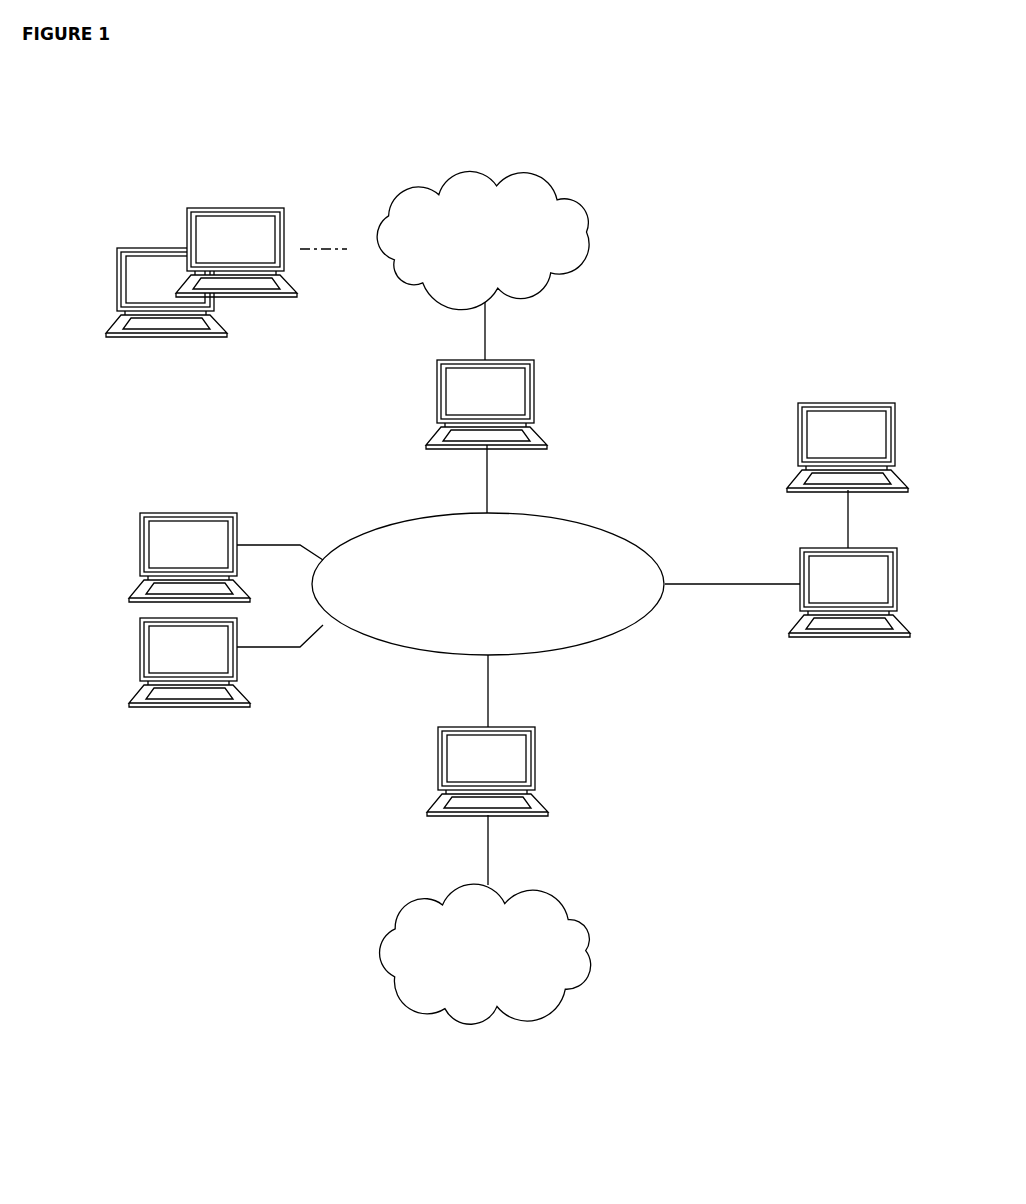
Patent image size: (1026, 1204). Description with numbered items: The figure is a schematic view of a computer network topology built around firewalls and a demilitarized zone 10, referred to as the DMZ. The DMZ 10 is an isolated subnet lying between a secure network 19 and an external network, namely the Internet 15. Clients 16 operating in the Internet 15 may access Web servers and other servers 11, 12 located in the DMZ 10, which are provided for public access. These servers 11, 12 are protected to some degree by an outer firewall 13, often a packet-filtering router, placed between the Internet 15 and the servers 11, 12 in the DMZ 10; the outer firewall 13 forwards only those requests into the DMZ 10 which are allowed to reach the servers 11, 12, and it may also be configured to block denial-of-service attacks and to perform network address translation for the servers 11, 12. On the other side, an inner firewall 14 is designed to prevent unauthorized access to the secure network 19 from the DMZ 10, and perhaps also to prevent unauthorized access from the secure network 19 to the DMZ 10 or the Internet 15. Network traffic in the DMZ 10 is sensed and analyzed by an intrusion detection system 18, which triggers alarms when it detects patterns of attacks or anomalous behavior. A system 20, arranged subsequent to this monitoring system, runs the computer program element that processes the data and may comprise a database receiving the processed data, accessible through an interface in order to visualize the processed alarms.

The demilitarized zone 10 is at (593, 540).
The server 11 is at (145, 542).
The server 12 is at (145, 645).
The outer firewall 13 is at (512, 412).
The inner firewall 14 is at (527, 753).
The Internet 15 is at (592, 225).
The clients 16 is at (190, 240).
The intrusion detection system 18 is at (800, 562).
The secure network 19 is at (597, 942).
The system 20 is at (800, 407).